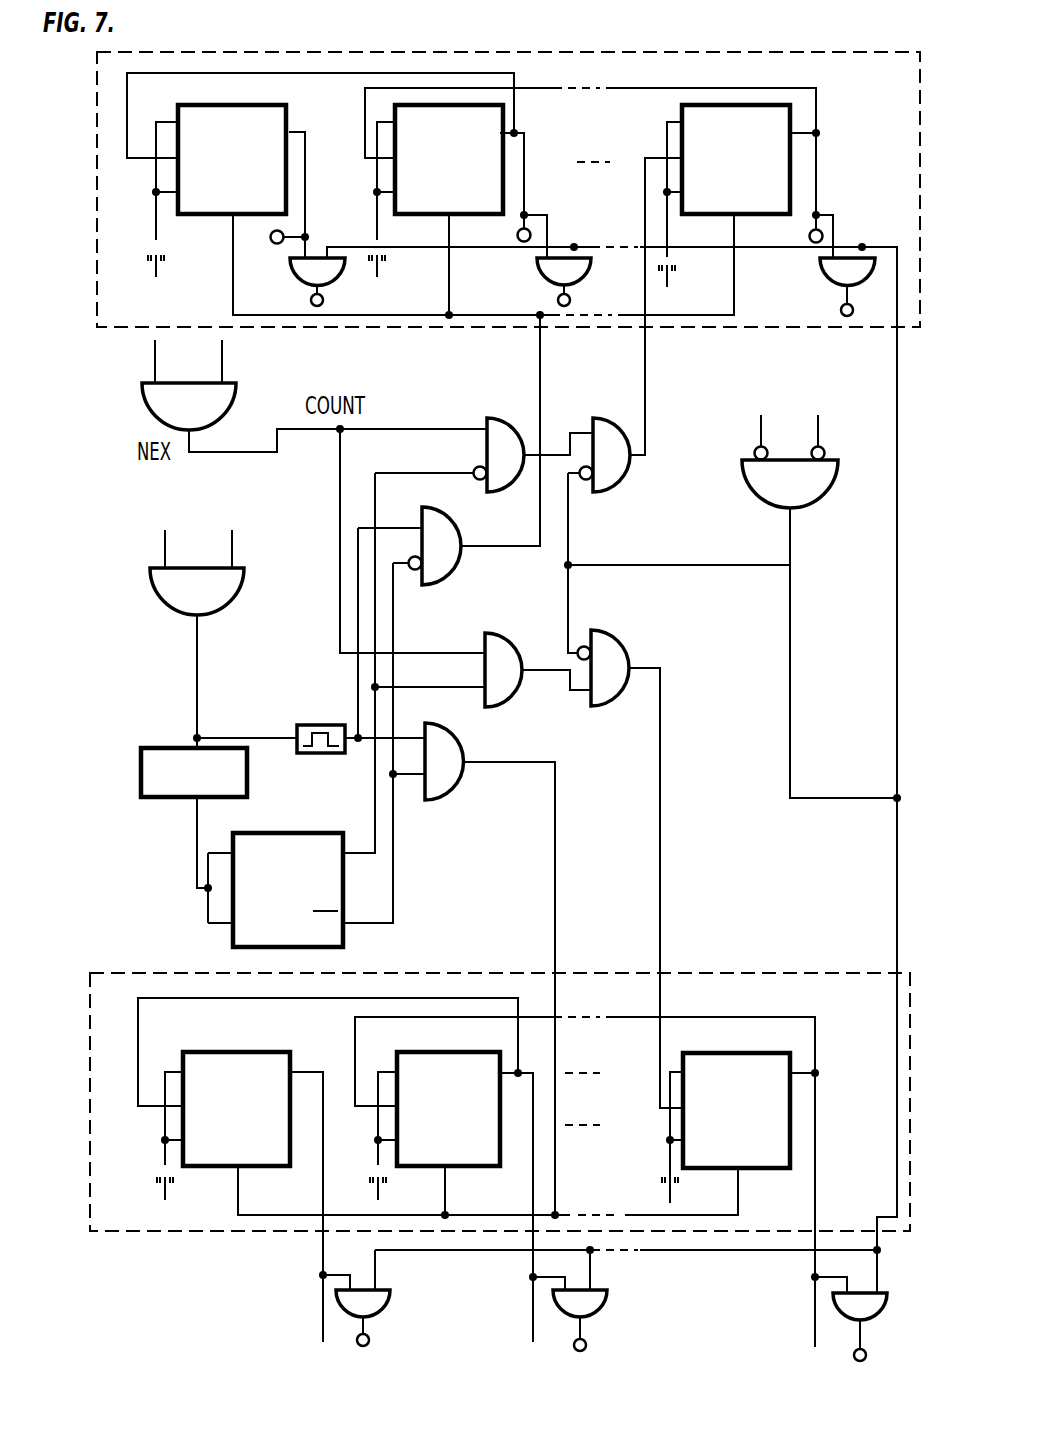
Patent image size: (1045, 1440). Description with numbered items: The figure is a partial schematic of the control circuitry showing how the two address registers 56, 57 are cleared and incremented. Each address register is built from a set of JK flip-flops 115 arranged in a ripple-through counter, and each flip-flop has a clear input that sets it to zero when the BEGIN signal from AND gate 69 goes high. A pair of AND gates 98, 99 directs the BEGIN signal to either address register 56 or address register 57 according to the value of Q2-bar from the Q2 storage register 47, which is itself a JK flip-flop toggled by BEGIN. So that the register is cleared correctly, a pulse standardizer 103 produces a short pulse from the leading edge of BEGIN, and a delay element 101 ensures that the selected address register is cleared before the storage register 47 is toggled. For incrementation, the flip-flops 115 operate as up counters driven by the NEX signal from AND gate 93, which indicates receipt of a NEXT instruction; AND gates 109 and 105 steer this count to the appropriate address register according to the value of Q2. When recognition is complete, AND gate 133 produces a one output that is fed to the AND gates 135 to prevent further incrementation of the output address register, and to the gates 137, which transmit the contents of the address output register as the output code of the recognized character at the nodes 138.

The address register 56 is at (95, 137).
The address register 57 is at (138, 972).
The JK flip-flop 115 is at (484, 636).
The gate 137 is at (298, 277).
The node 138 is at (322, 303).
The AND gate 93 is at (177, 423).
The AND gate 69 is at (185, 607).
The AND gate 133 is at (775, 495).
The AND gate 109 is at (483, 454).
The AND gate 135 is at (630, 478).
The AND gate 98 is at (429, 558).
The AND gate 105 is at (502, 640).
The AND gate 99 is at (430, 774).
The pulse standardizer 103 is at (319, 724).
The delay element 101 is at (141, 775).
The Q2 storage register 47 is at (271, 904).